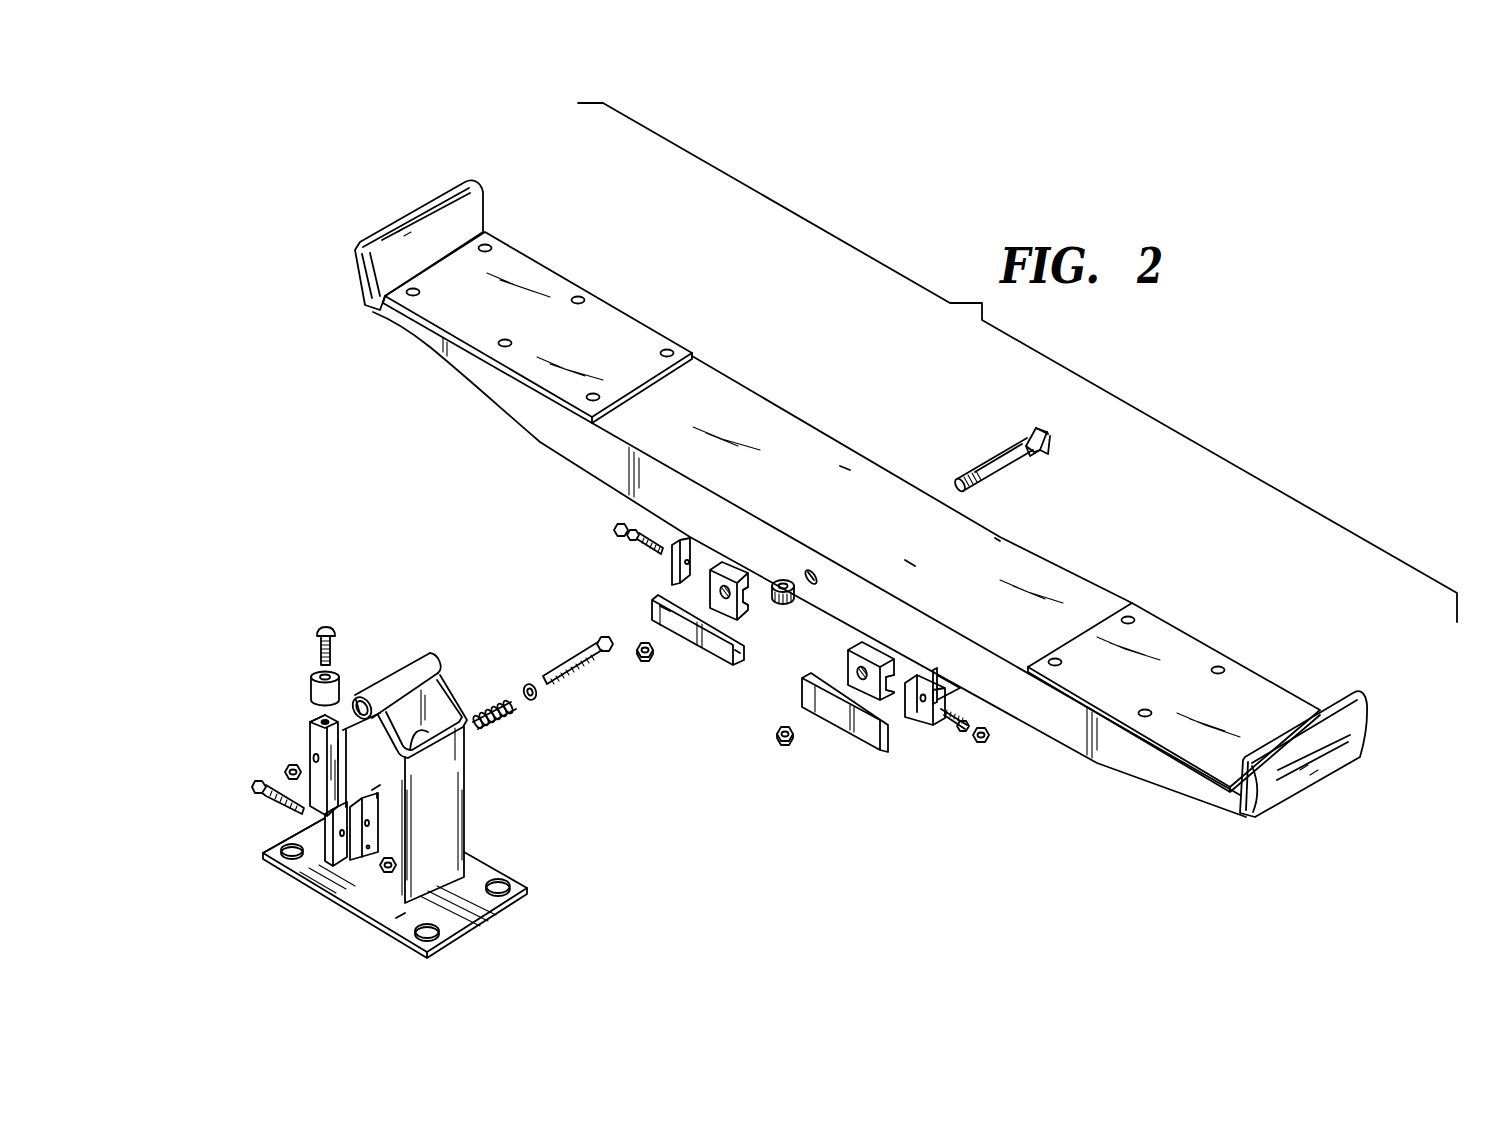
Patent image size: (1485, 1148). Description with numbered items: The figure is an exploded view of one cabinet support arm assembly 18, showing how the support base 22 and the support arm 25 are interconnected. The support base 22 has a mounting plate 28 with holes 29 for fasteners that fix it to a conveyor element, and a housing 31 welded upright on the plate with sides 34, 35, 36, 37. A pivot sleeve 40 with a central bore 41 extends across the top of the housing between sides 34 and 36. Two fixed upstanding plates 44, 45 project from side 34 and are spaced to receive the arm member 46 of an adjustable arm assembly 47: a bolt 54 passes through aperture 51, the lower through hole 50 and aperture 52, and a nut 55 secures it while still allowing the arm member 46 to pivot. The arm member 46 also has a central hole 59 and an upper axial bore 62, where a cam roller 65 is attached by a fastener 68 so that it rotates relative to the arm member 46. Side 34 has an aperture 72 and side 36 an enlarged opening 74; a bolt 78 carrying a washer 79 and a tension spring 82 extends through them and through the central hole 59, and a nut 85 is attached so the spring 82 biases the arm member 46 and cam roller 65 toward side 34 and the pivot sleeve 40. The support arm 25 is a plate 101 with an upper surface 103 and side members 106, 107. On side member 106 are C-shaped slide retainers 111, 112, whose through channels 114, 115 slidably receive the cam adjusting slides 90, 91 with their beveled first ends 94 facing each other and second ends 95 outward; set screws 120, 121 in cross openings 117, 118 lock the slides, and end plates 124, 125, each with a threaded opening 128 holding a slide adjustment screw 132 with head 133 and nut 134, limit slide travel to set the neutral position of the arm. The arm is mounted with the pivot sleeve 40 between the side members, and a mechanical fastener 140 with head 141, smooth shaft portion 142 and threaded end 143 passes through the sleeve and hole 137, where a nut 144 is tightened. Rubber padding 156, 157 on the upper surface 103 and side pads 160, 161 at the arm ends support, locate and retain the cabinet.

The cabinet support arm assembly 18 is at (846, 200).
The support base 22 is at (382, 745).
The support arm 25 is at (788, 560).
The mounting plate 28 is at (416, 889).
The holes 29 is at (512, 881).
The housing 31 is at (445, 808).
The side 34 is at (368, 877).
The side 35 is at (452, 792).
The side 36 is at (453, 686).
The side 37 is at (312, 710).
The pivot sleeve 40 is at (395, 663).
The central bore 41 is at (352, 703).
The upstanding plate 44 is at (251, 857).
The upstanding plate 45 is at (373, 823).
The arm member 46 is at (241, 729).
The adjustable arm assembly 47 is at (310, 740).
The lower through hole 50 is at (327, 808).
The aperture 51 is at (290, 858).
The aperture 52 is at (322, 890).
The bolt 54 is at (252, 789).
The nut 55 is at (400, 918).
The central hole 59 is at (313, 758).
The upper axial bore 62 is at (320, 714).
The cam roller 65 is at (315, 672).
The fastener 68 is at (328, 625).
The aperture 72 is at (380, 785).
The enlarged opening 74 is at (437, 695).
The bolt 78 is at (572, 670).
The washer 79 is at (532, 700).
The tension spring 82 is at (490, 714).
The nut 85 is at (285, 772).
The cam adjusting slide 90 is at (646, 641).
The cam adjusting slide 91 is at (845, 730).
The first end 94 is at (742, 680).
The second end 95 is at (660, 612).
The plate 101 is at (850, 470).
The upper surface 103 is at (922, 547).
The side member 106 is at (788, 622).
The side member 107 is at (1000, 540).
The slide retainer 111 is at (609, 521).
The slide retainer 112 is at (865, 672).
The through channel 114 is at (758, 588).
The through channel 115 is at (895, 680).
The cross opening 117 is at (759, 544).
The cross opening 118 is at (899, 629).
The set screw 120 is at (640, 645).
The set screw 121 is at (782, 740).
The end plate 124 is at (668, 567).
The end plate 125 is at (923, 705).
The threaded opening 128 is at (923, 747).
The slide adjustment screw 132 is at (1024, 736).
The head 133 is at (978, 730).
The nut 134 is at (990, 742).
The hole 137 is at (812, 572).
The mechanical fastener 140 is at (1022, 441).
The head 141 is at (1052, 452).
The smooth shaft portion 142 is at (968, 446).
The threaded end 143 is at (942, 467).
The nut 144 is at (786, 580).
The padding 156 is at (600, 320).
The padding 157 is at (1170, 650).
The side pad 160 is at (404, 214).
The side pad 161 is at (1348, 693).